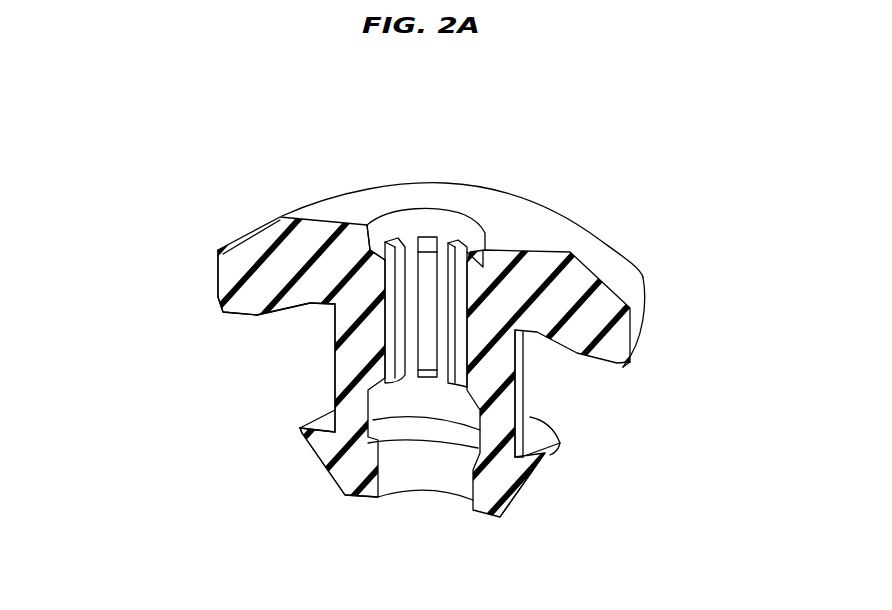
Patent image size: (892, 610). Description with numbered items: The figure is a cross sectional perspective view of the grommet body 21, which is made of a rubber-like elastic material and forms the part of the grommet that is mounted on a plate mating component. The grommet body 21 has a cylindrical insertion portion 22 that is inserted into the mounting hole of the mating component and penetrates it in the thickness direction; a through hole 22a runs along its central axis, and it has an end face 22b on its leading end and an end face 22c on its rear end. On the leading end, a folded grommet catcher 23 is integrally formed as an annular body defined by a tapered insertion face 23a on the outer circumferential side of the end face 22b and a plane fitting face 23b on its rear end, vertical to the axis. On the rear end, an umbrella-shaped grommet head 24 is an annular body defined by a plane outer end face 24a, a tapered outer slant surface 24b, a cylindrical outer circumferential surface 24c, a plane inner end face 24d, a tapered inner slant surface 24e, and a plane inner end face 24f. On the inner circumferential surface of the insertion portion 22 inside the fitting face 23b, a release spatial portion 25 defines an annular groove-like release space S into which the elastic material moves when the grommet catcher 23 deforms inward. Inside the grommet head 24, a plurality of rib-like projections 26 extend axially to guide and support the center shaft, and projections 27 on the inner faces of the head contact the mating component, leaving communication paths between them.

The grommet body 21 is at (622, 221).
The cylindrical insertion portion 22 is at (343, 378).
The through hole 22a is at (420, 473).
The end face 22b is at (365, 500).
The end face 22c is at (366, 220).
The folded grommet catcher 23 is at (527, 470).
The tapered insertion face 23a is at (520, 490).
The plane fitting face 23b is at (560, 443).
The umbrella-shaped grommet head 24 is at (590, 308).
The plane outer end face 24a is at (318, 214).
The tapered outer slant surface 24b is at (260, 232).
The cylindrical outer circumferential surface 24c is at (217, 280).
The plane inner end face 24d is at (240, 315).
The tapered inner slant surface 24e is at (280, 313).
The plane inner end face 24f is at (332, 378).
The release spatial portion 25 is at (475, 443).
The rib-like projections 26 is at (432, 252).
The projections 27 is at (605, 367).
The release space S is at (407, 413).